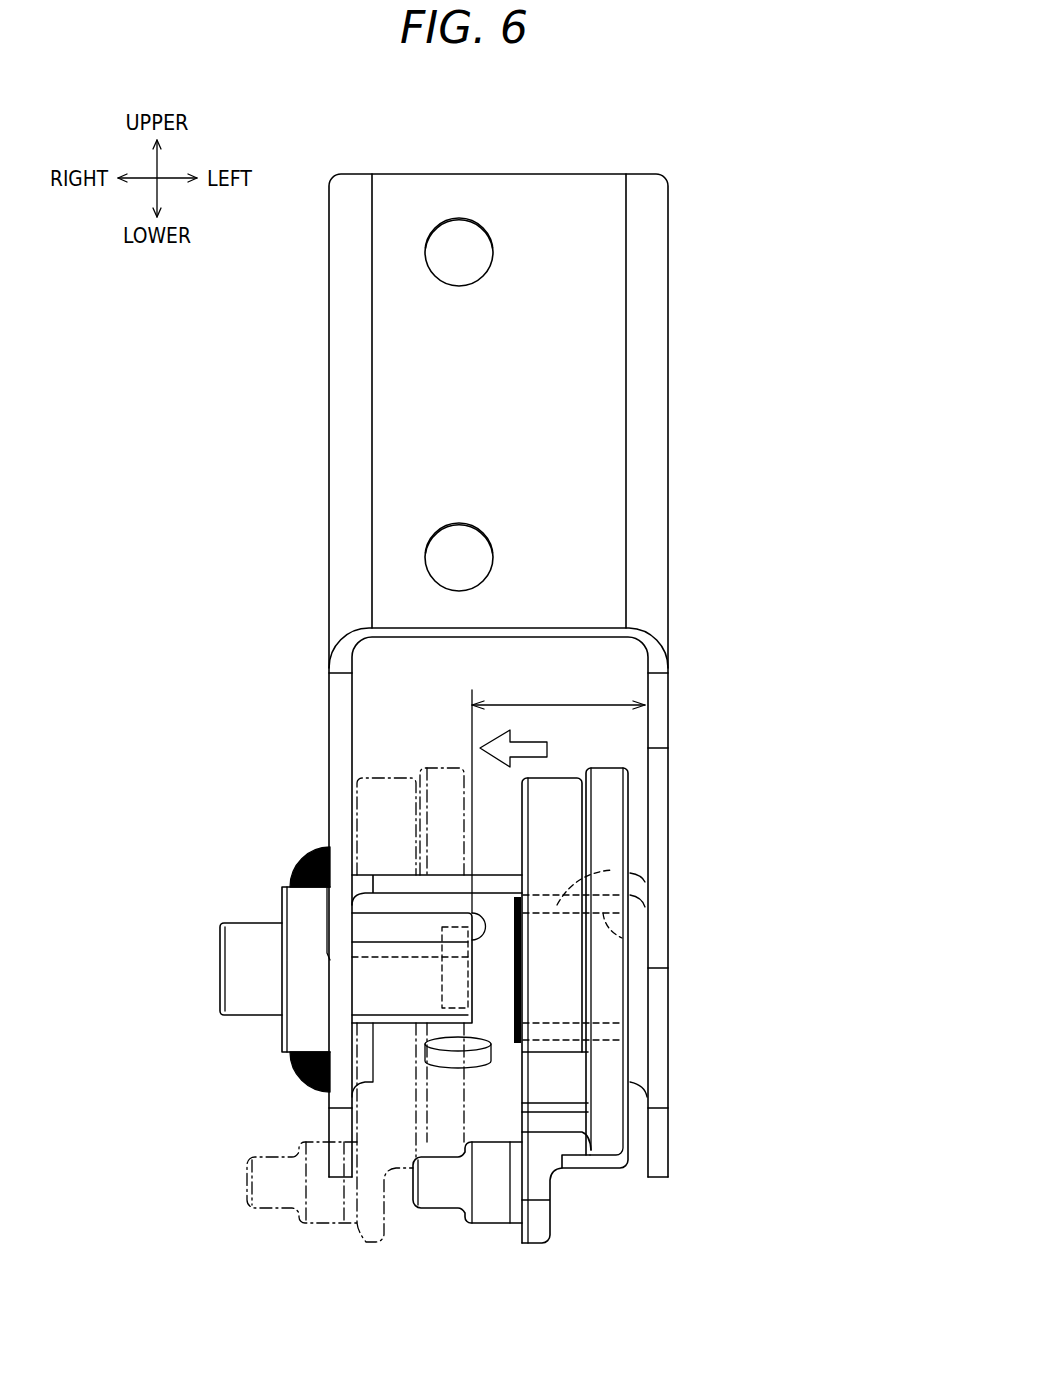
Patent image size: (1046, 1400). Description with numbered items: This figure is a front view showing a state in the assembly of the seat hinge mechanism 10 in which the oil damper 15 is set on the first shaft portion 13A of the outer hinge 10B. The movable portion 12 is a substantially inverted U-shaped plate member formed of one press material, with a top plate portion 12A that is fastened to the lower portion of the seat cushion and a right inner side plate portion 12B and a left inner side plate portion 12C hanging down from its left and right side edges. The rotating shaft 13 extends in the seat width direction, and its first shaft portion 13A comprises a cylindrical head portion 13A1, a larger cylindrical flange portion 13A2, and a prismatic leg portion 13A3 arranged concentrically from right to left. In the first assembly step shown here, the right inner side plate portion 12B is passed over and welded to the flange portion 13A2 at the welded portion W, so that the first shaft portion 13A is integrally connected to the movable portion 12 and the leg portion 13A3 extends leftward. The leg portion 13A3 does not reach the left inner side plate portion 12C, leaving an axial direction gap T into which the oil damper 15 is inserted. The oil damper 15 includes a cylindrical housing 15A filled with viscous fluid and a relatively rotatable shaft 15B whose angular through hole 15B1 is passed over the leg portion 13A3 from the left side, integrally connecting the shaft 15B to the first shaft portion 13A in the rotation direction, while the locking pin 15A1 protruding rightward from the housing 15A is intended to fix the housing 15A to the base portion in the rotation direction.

The seat hinge mechanism 10 is at (476, 704).
The outer hinge 10B is at (717, 165).
The movable portion 12 is at (647, 352).
The top plate portion 12A is at (583, 447).
The right inner side plate portion 12B is at (342, 722).
The left inner side plate portion 12C is at (658, 730).
The rotating shaft 13 is at (302, 915).
The first shaft portion 13A is at (242, 952).
The head portion 13A1 is at (242, 982).
The flange portion 13A2 is at (305, 915).
The leg portion 13A3 is at (405, 932).
The oil damper 15 is at (625, 830).
The housing 15A is at (565, 975).
The locking pin 15A1 is at (440, 1193).
The shaft 15B is at (625, 870).
The through hole 15B1 is at (622, 938).
The welded portion W is at (303, 857).
The axial direction gap T is at (558, 796).